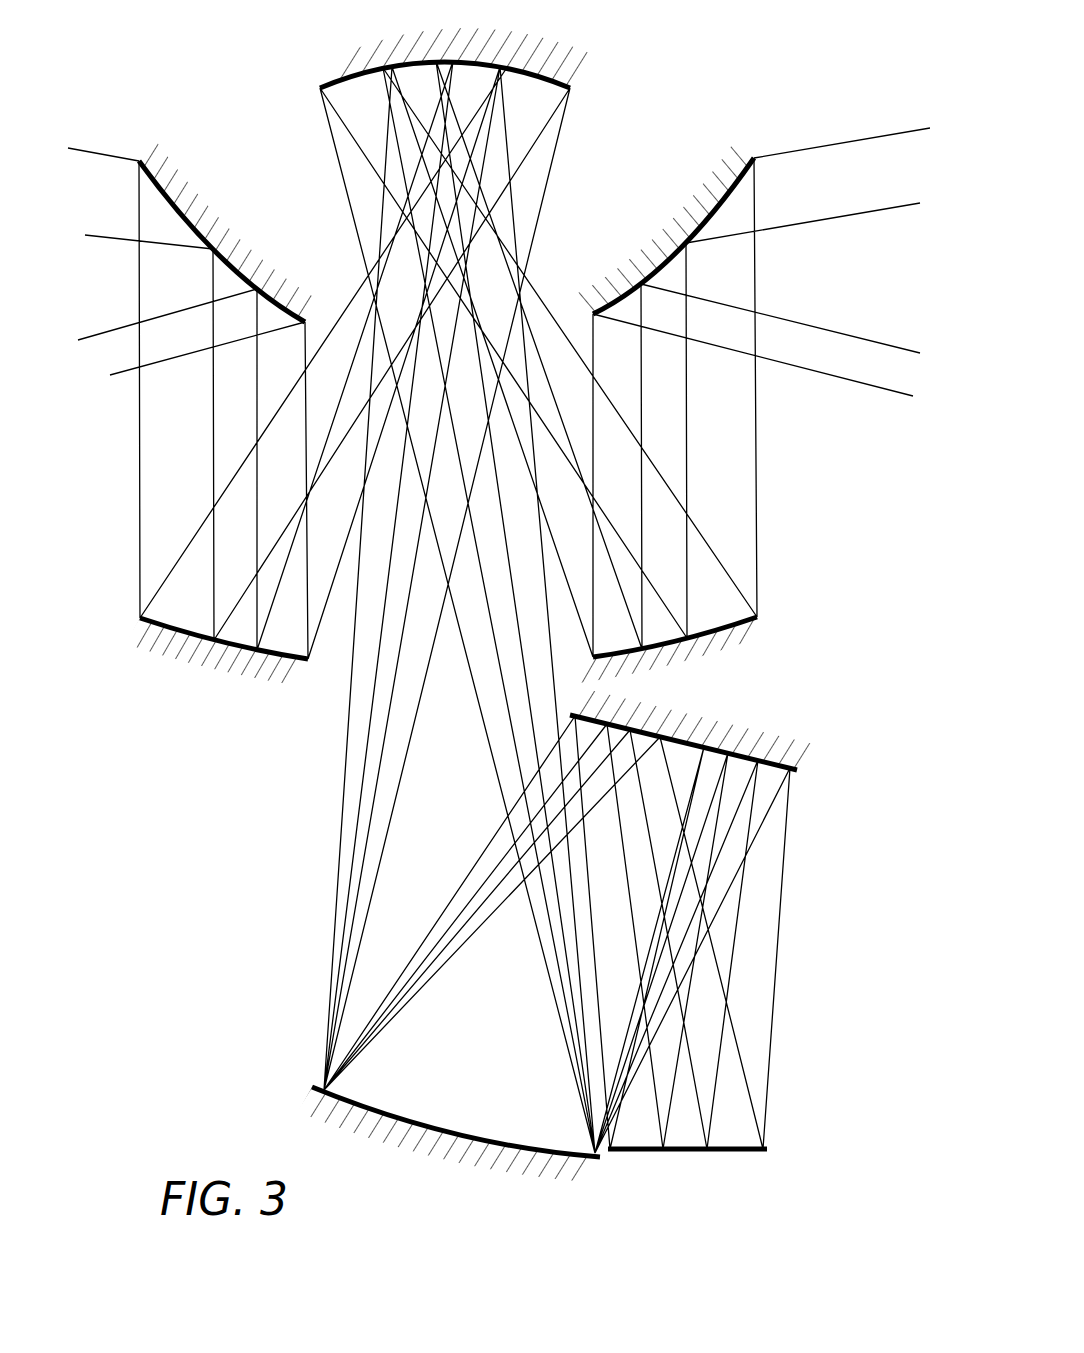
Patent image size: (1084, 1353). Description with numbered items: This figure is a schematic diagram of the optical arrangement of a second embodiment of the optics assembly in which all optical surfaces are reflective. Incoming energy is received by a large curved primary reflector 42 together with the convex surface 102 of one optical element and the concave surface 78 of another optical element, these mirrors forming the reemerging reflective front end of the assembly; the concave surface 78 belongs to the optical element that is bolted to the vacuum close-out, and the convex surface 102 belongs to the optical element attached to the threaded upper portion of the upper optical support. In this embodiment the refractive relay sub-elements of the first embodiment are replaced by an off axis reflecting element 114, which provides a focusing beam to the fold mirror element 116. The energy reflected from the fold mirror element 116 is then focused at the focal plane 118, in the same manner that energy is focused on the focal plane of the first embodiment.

The primary mirror 42 is at (549, 82).
The convex surface 102 is at (190, 226).
The concave surface 78 is at (190, 634).
The fold mirror element 116 is at (703, 755).
The off axis reflecting element 114 is at (427, 1124).
The focal plane 118 is at (733, 1148).